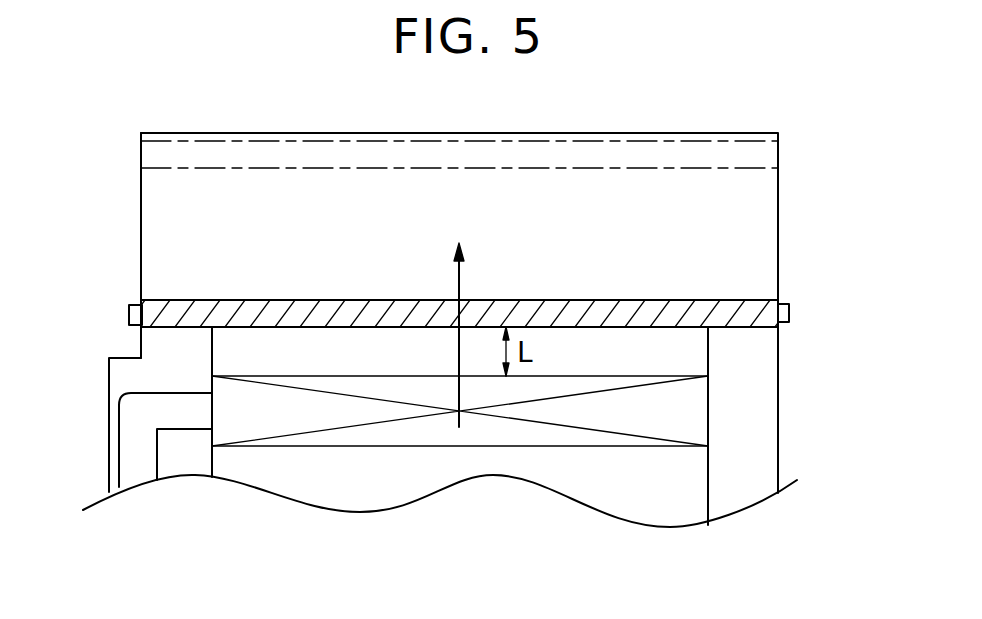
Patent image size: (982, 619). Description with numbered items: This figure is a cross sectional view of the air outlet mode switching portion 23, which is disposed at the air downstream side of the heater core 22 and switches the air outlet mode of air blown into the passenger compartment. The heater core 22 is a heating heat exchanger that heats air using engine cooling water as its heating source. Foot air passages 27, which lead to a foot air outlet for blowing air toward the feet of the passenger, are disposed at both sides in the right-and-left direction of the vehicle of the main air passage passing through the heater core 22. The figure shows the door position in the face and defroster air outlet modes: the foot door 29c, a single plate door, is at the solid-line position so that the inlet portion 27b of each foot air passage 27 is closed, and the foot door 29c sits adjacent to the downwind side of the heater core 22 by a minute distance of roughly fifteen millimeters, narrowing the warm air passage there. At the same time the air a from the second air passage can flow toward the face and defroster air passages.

The air outlet mode switching portion 23 is at (702, 180).
The air a is at (459, 268).
The foot door 29c is at (665, 303).
The inlet portion 27b is at (198, 329).
The foot air passage 27 is at (128, 377).
The heater core 22 is at (692, 400).